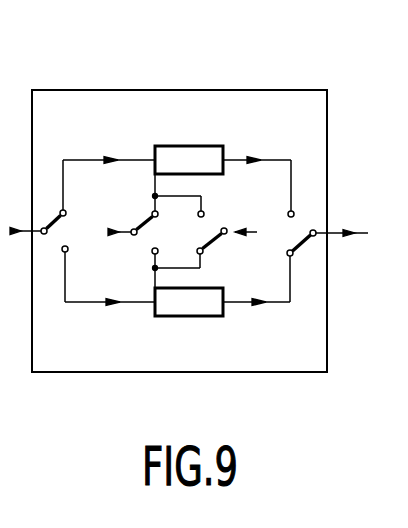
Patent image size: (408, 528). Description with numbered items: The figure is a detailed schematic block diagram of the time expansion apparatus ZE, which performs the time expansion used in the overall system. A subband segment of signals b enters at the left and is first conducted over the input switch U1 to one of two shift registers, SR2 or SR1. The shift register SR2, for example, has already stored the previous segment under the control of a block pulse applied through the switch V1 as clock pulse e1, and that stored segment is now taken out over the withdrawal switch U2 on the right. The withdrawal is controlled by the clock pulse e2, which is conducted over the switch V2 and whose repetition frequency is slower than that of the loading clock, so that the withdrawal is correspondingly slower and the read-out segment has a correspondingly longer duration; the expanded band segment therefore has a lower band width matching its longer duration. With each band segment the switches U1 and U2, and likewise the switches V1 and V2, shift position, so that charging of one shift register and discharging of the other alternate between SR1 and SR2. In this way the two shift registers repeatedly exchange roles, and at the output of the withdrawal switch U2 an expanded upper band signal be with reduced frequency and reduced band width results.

The time expansion apparatus ZE is at (178, 110).
The first shift register SR1 is at (177, 293).
The second shift register SR2 is at (177, 171).
The subband segment signal b is at (25, 216).
The expanded upper band signal be is at (342, 216).
The input switch U1 is at (52, 231).
The withdrawal switch U2 is at (304, 231).
The first clock switch V1 is at (159, 232).
The second clock switch V2 is at (218, 222).
The first clock pulse e1 is at (121, 249).
The second clock pulse e2 is at (244, 251).